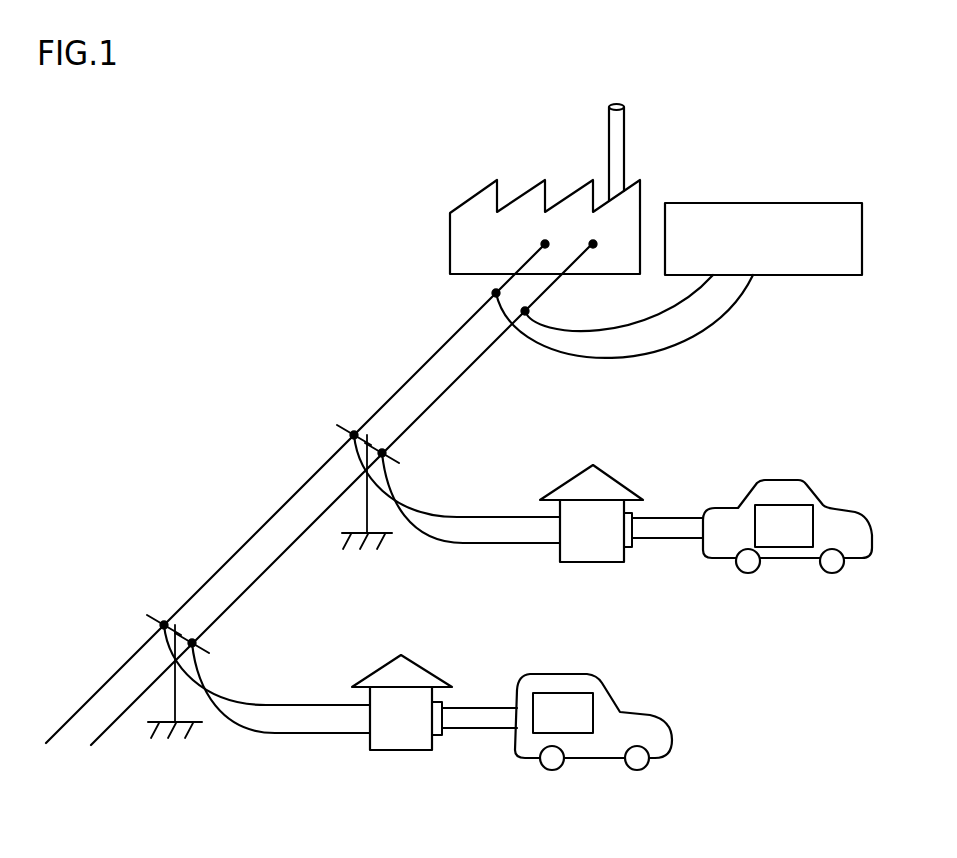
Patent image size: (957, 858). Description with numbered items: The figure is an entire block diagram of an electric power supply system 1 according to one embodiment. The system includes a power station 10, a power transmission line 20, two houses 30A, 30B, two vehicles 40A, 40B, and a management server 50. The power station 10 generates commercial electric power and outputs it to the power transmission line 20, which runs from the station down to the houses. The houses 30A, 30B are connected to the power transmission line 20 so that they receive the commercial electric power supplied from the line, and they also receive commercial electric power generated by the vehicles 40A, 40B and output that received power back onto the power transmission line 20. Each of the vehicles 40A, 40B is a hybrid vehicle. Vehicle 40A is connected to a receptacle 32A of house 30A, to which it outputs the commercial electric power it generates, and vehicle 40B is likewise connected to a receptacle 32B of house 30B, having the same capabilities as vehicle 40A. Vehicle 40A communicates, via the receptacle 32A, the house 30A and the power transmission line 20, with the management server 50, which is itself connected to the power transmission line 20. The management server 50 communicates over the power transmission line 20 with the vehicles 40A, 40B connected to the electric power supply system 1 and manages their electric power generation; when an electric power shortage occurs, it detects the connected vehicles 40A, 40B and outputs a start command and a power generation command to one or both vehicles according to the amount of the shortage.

The electric power supply system 1 is at (222, 156).
The power station 10 is at (480, 193).
The power transmission line 20 is at (450, 398).
The house 30A is at (613, 478).
The house 30B is at (422, 669).
The receptacle 32A is at (628, 548).
The receptacle 32B is at (436, 751).
The vehicle 40A is at (787, 479).
The vehicle 40B is at (638, 715).
The management server 50 is at (767, 203).